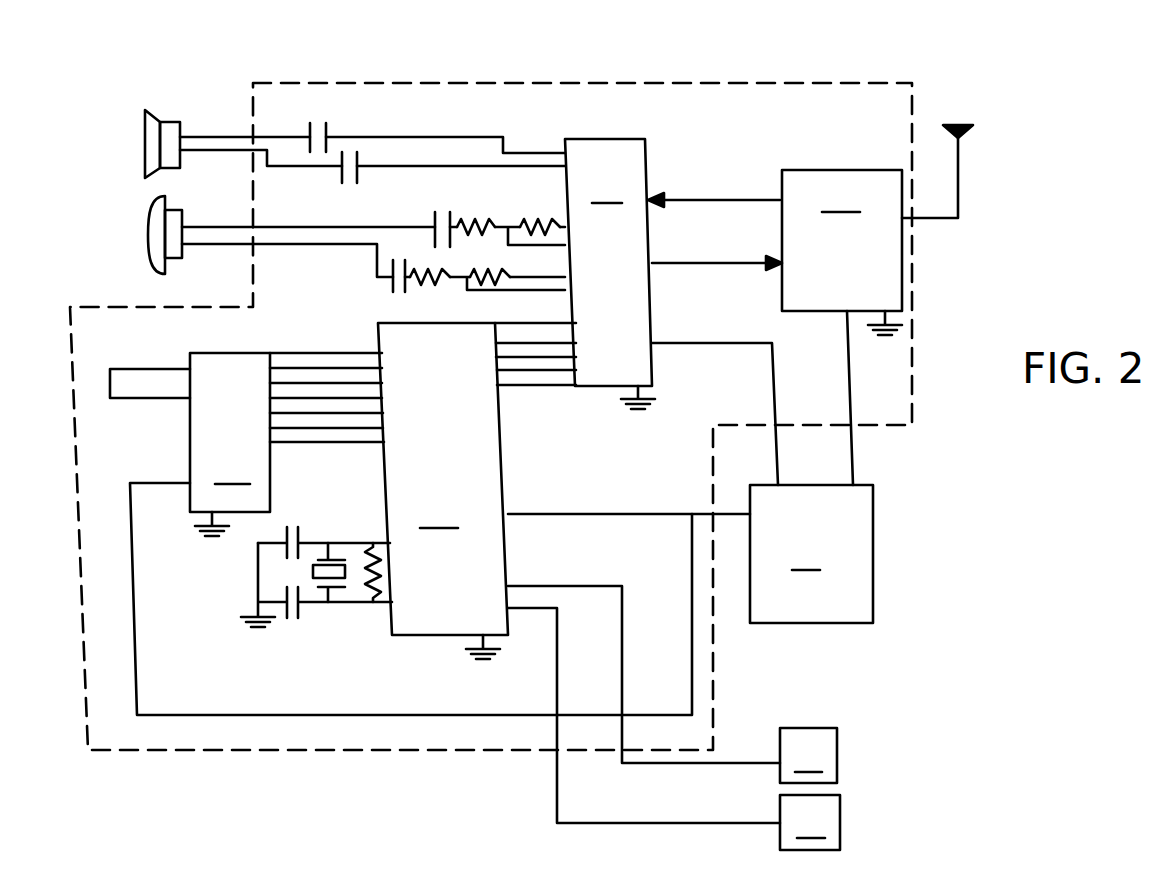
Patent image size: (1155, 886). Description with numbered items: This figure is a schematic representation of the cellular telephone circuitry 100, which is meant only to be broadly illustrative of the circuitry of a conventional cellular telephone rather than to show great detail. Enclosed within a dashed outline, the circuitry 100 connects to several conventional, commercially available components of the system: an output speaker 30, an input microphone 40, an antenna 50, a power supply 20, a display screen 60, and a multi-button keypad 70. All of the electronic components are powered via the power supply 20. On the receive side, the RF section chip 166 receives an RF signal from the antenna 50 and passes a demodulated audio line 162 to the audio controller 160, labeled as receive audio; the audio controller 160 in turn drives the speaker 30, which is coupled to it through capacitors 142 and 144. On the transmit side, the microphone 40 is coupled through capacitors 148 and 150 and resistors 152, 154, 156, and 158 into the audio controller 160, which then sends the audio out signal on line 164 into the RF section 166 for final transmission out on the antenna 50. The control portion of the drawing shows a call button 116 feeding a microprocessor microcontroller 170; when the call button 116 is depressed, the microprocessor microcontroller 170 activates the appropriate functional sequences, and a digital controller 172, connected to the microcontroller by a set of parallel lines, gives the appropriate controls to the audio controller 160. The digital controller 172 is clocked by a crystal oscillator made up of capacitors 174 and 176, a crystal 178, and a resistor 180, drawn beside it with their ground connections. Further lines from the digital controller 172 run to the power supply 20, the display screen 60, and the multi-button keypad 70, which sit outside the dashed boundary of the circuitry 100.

The cellular telephone circuitry 100 is at (772, 95).
The output speaker 30 is at (152, 138).
The input microphone 40 is at (155, 238).
The antenna 50 is at (962, 125).
The capacitor 142 is at (328, 130).
The capacitor 144 is at (342, 178).
The capacitor 148 is at (432, 222).
The capacitor 150 is at (390, 288).
The resistor 152 is at (480, 222).
The resistor 154 is at (545, 224).
The resistor 156 is at (438, 285).
The resistor 158 is at (492, 285).
The audio controller 160 is at (610, 274).
The demodulated audio line 162 is at (702, 198).
The audio out line 164 is at (685, 262).
The RF section chip 166 is at (842, 252).
The call button 116 is at (125, 367).
The microprocessor microcontroller 170 is at (411, 534).
The digital controller 172 is at (579, 573).
The capacitor 174 is at (300, 530).
The capacitor 176 is at (285, 616).
The crystal 178 is at (352, 578).
The resistor 180 is at (360, 547).
The power supply 20 is at (762, 467).
The display screen 60 is at (808, 755).
The multi-button keypad 70 is at (810, 822).